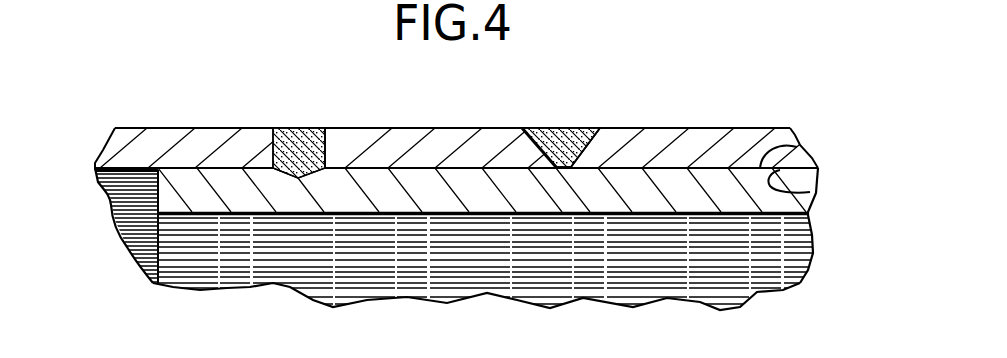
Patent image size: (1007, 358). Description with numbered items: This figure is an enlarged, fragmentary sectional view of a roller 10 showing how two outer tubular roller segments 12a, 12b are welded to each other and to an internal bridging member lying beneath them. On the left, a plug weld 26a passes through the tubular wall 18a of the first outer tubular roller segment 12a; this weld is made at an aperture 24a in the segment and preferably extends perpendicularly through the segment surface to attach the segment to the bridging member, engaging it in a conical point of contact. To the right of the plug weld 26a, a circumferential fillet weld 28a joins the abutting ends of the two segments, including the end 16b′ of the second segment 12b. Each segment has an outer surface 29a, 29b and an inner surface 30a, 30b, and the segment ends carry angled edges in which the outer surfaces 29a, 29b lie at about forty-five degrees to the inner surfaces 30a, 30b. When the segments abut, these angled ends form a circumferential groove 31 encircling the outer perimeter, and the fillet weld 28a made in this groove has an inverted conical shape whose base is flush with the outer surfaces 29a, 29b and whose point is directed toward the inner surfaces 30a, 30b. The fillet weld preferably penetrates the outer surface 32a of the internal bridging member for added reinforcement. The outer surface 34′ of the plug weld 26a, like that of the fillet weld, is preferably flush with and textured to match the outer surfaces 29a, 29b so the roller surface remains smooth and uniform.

The laminate assembly 10 is at (108, 120).
The outer tubular roller segment 12a is at (118, 128).
The outer tubular roller segment 12b is at (760, 128).
The end of outer tubular roller segment 16b′ is at (622, 152).
The tubular wall 18a is at (238, 147).
The aperture 24a is at (275, 152).
The plug weld 26a is at (303, 147).
The circumferential fillet weld 28a is at (560, 128).
The outer surface 29a is at (182, 128).
The outer surface 29b is at (650, 128).
The inner surface 30a is at (102, 184).
The inner surface 30b is at (813, 195).
The circumferential groove 31 is at (534, 142).
The outer surface of internal bridging member 32a is at (797, 147).
The outer surface of plug weld 34′ is at (325, 128).